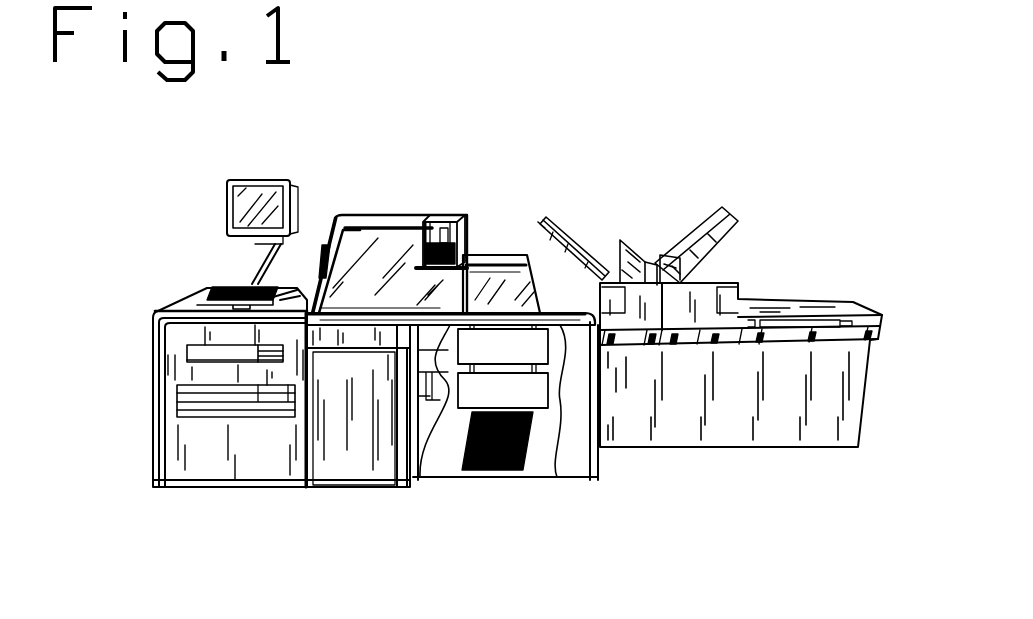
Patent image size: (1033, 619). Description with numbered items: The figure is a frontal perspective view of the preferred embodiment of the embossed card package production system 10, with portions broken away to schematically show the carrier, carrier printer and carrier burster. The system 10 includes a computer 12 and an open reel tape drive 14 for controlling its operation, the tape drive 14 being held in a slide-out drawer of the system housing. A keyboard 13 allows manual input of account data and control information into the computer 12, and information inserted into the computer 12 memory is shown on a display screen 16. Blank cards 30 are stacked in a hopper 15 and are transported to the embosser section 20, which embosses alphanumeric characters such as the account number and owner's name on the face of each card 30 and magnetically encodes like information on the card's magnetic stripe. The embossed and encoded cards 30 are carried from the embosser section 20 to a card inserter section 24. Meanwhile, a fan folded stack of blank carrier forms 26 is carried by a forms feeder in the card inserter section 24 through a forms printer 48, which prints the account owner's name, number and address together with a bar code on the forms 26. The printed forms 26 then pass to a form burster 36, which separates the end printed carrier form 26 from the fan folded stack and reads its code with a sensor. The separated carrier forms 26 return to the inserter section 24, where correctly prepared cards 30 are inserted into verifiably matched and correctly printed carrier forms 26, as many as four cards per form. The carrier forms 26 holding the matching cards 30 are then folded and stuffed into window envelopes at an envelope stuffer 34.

The system 10 is at (635, 170).
The computer 12 is at (183, 414).
The keyboard 13 is at (222, 290).
The open reel tape drive 14 is at (190, 352).
The hopper 15 is at (435, 230).
The display screen 16 is at (268, 183).
The embosser section 20 is at (404, 212).
The card inserter section 24 is at (482, 250).
The carrier forms 26 is at (497, 470).
The card 30 is at (452, 232).
The envelope stuffer 34 is at (700, 296).
The form burster 36 is at (548, 358).
The forms printer 48 is at (462, 404).